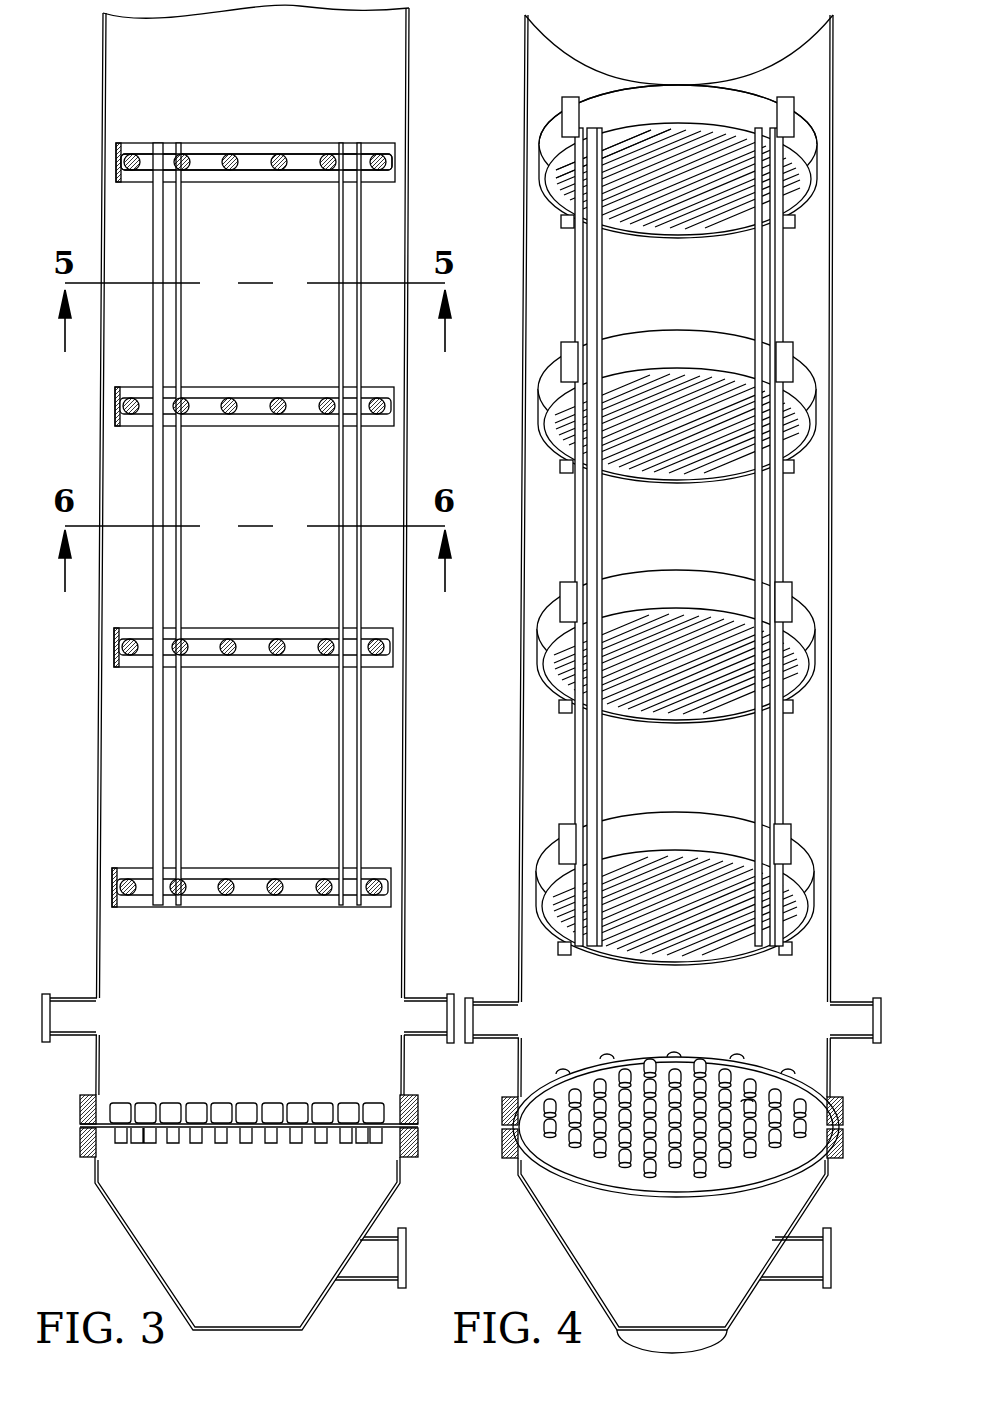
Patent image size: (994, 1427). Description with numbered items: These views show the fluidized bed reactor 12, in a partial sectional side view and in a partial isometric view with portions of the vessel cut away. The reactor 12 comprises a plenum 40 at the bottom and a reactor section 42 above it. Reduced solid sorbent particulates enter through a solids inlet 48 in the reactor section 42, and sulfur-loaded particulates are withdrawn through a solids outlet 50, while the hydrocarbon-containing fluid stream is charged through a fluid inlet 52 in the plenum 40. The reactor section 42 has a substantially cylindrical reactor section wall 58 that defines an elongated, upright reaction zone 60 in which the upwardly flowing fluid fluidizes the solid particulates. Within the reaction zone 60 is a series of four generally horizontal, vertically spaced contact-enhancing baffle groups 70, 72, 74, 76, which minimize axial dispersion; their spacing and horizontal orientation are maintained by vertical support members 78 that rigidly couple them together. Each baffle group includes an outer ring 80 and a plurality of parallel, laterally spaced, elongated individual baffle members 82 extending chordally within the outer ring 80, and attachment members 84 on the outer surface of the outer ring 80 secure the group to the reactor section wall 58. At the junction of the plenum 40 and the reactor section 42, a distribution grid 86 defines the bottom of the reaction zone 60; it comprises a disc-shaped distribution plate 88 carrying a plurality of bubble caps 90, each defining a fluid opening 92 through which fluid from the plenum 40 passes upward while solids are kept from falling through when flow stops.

In FIG. 3, the reactor 12 is at (221, 551).
In FIG. 4, the reactor 12 is at (686, 556).
In FIG. 3, the plenum 40 is at (137, 1248).
In FIG. 4, the plenum 40 is at (673, 1255).
In FIG. 3, the reactor section 42 is at (221, 551).
In FIG. 4, the reactor section 42 is at (712, 556).
In FIG. 3, the solids inlet 48 is at (44, 1043).
In FIG. 4, the solids inlet 48 is at (465, 1044).
In FIG. 3, the solids outlet 50 is at (455, 996).
In FIG. 4, the solids outlet 50 is at (878, 998).
In FIG. 3, the fluid inlet 52 is at (406, 1262).
In FIG. 4, the fluid inlet 52 is at (832, 1262).
In FIG. 3, the reactor section wall 58 is at (97, 850).
In FIG. 4, the reactor section wall 58 is at (834, 700).
In FIG. 3, the reaction zone 60 is at (268, 740).
In FIG. 4, the reaction zone 60 is at (690, 775).
In FIG. 3, the contact-enhancing baffle group 70 is at (114, 908).
In FIG. 4, the contact-enhancing baffle group 70 is at (818, 841).
In FIG. 3, the contact-enhancing baffle group 72 is at (116, 668).
In FIG. 4, the contact-enhancing baffle group 72 is at (820, 595).
In FIG. 3, the contact-enhancing baffle group 74 is at (117, 428).
In FIG. 4, the contact-enhancing baffle group 74 is at (822, 357).
In FIG. 3, the contact-enhancing baffle group 76 is at (117, 187).
In FIG. 4, the contact-enhancing baffle group 76 is at (816, 132).
In FIG. 3, the vertical support member 78 is at (352, 215).
In FIG. 4, the vertical support member 78 is at (779, 238).
In FIG. 3, the outer ring 80 is at (300, 143).
In FIG. 4, the outer ring 80 is at (672, 95).
In FIG. 3, the individual baffle member 82 is at (266, 160).
In FIG. 4, the individual baffle member 82 is at (702, 205).
In FIG. 4, the attachment member 84 is at (777, 100).
In FIG. 3, the distribution grid 86 is at (112, 1135).
In FIG. 4, the distribution grid 86 is at (567, 1182).
In FIG. 3, the distribution plate 88 is at (80, 1125).
In FIG. 4, the distribution plate 88 is at (812, 1162).
In FIG. 3, the bubble cap 90 is at (219, 1110).
In FIG. 4, the bubble cap 90 is at (737, 1056).
In FIG. 4, the fluid opening 92 is at (746, 1100).